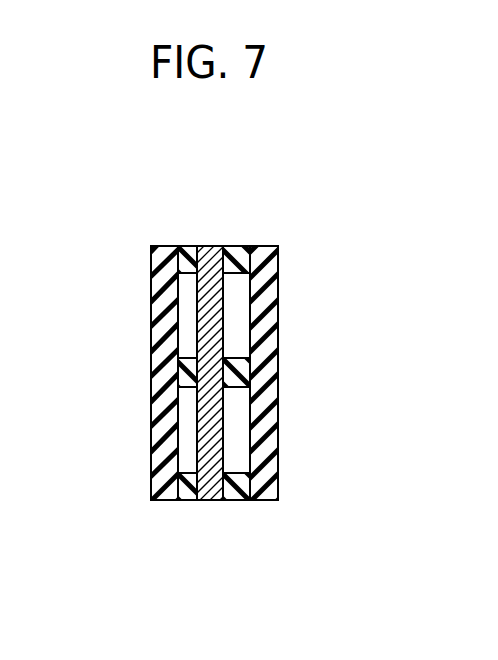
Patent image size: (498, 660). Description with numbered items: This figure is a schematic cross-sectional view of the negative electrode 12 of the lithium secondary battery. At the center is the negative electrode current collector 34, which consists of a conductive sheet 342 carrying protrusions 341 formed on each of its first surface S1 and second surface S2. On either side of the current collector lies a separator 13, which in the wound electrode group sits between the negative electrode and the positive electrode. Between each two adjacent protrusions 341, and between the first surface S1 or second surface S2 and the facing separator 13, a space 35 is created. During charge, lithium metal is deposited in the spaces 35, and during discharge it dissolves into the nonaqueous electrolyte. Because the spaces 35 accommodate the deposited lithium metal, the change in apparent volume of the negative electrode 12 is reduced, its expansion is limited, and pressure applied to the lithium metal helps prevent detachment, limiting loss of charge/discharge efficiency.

The negative electrode 12 is at (249, 503).
The separator 13 is at (170, 500).
The negative electrode current collector 34 is at (213, 203).
The protrusions 341 is at (285, 170).
The conductive sheet 342 is at (215, 255).
The space 35 is at (185, 352).
The first surface S1 is at (227, 328).
The second surface S2 is at (193, 312).